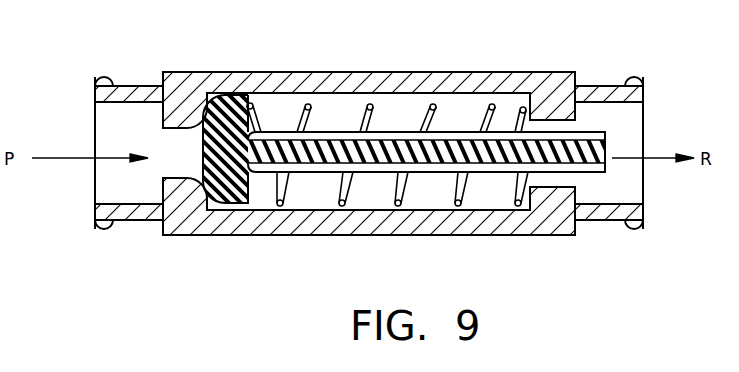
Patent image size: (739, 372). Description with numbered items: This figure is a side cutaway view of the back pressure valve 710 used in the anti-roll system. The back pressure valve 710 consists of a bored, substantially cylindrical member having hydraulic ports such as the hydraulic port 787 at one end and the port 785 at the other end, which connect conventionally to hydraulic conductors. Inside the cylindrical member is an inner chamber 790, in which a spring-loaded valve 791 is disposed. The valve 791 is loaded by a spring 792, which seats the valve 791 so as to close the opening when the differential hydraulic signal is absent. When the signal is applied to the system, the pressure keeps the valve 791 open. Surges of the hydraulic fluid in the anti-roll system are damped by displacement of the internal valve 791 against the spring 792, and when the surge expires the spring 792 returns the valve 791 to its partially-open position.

The back pressure valve 710 is at (427, 72).
The outlet tube 785 is at (643, 101).
The hydraulic port 787 is at (95, 100).
The inner chamber 790 is at (240, 72).
The spring-loaded valve 791 is at (262, 96).
The spring 792 is at (311, 104).